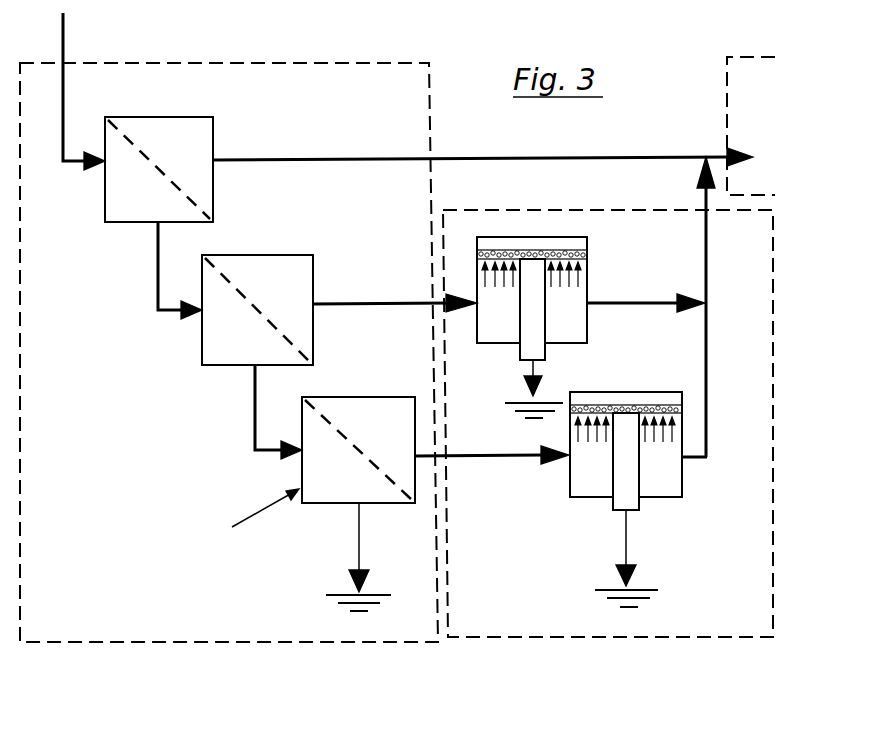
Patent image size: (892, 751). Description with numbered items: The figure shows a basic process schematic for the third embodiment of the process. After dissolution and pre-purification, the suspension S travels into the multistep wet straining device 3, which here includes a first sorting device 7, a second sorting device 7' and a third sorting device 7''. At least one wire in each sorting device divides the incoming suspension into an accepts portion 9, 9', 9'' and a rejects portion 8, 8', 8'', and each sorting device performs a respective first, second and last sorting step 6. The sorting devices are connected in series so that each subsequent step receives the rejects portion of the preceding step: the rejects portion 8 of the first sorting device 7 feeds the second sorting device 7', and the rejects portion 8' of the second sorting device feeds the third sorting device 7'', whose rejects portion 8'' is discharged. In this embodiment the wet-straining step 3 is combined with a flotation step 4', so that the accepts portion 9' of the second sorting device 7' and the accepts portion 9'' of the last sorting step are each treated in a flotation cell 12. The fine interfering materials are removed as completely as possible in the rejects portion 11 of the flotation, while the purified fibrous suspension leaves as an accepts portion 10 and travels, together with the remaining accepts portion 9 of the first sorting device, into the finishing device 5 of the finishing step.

The suspension S is at (63, 43).
The wet straining device 3 is at (420, 96).
The flotation step 4' is at (608, 423).
The finishing device 5 is at (759, 106).
The sorting step 6 is at (249, 520).
The first sorting device 7 is at (159, 169).
The second sorting device 7' is at (257, 310).
The third sorting device 7'' is at (358, 450).
The rejects portion 8 is at (157, 270).
The rejects portion 8' is at (251, 412).
The rejects portion 8'' is at (342, 557).
The accepts portion 9 is at (483, 131).
The accepts portion 9' is at (395, 278).
The accepts portion 9'' is at (492, 509).
The accepts portion 10 is at (708, 369).
The rejects portion 11 is at (626, 545).
The flotation cell 12 is at (587, 337).